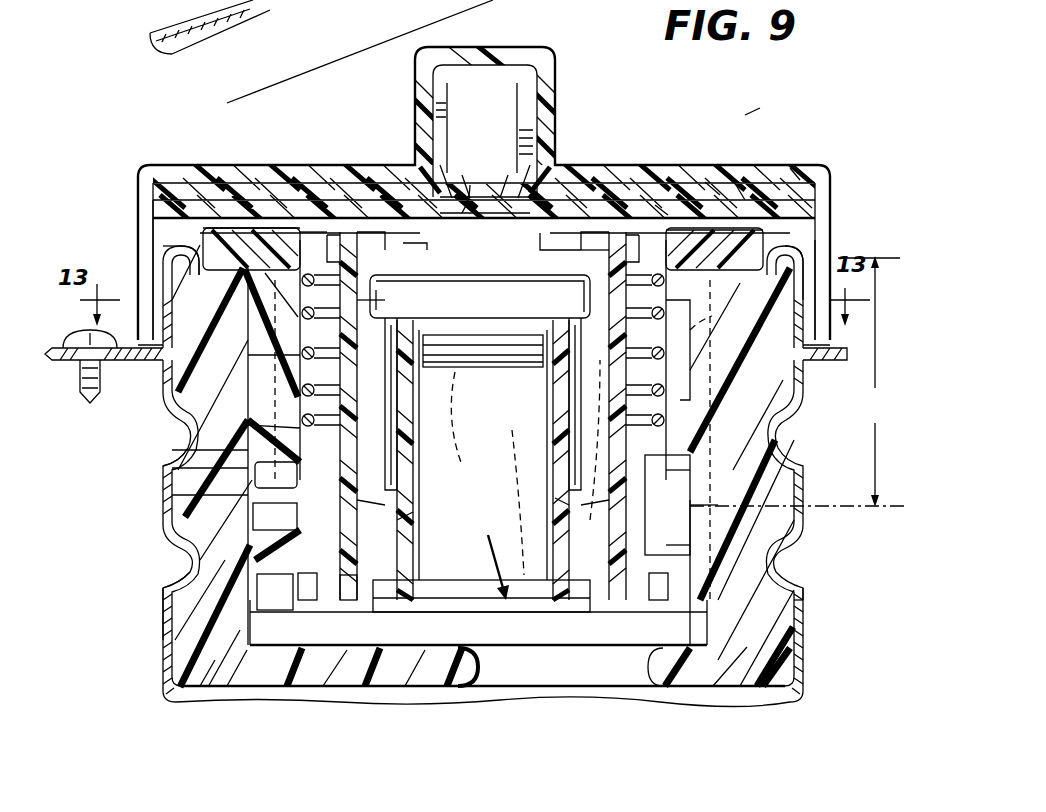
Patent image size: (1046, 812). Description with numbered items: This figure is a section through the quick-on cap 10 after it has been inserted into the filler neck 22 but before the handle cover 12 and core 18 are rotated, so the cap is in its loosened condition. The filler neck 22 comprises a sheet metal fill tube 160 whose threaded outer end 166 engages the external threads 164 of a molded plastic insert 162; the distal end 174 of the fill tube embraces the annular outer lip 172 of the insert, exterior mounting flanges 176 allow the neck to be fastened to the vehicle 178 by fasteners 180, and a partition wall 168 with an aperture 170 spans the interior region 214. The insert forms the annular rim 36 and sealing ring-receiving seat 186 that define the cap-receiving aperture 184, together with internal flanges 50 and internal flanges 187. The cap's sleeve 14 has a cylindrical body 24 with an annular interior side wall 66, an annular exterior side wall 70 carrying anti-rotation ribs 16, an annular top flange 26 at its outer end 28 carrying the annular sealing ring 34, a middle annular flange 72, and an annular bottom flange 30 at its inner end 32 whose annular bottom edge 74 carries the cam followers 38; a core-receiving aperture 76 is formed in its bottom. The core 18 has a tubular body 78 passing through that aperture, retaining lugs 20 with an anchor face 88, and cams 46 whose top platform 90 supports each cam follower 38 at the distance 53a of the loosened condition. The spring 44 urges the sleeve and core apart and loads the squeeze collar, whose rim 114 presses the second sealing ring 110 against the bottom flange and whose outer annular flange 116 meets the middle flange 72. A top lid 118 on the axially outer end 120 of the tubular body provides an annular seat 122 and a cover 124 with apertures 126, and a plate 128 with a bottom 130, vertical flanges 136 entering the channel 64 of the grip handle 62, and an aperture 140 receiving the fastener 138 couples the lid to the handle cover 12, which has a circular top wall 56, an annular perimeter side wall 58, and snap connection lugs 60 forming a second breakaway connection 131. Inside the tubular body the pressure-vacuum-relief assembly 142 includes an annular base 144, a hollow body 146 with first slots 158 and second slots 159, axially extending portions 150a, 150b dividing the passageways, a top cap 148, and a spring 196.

The quick-on cap 10 is at (750, 110).
The handle cover 12 is at (786, 165).
The sleeve 14 is at (690, 233).
The anti-rotation ribs 16 is at (260, 340).
The core 18 is at (637, 265).
The retaining lugs 20 is at (265, 600).
The filler neck 22 is at (804, 686).
The cylindrical body 24 is at (688, 300).
The annular top flange 26 is at (712, 182).
The outer end 28 is at (345, 232).
The annular bottom flange 30 is at (677, 487).
The inner end 32 is at (712, 478).
The annular sealing ring 34 is at (236, 250).
The annular rim 36 is at (210, 275).
The cam follower 38 is at (626, 542).
The spring 44 is at (318, 430).
The cam 46 is at (670, 547).
The internal flanges 50 is at (697, 506).
The distance 53a is at (869, 381).
The circular top wall 56 is at (192, 183).
The annular perimeter side wall 58 is at (138, 192).
The snap connection lugs 60 is at (208, 195).
The grip handle 62 is at (568, 88).
The channel 64 is at (553, 66).
The annular interior side wall 66 is at (255, 358).
The annular exterior side wall 70 is at (703, 345).
The middle annular flange 72 is at (348, 447).
The annular bottom edge 74 is at (340, 540).
The core-receiving aperture 76 is at (617, 505).
The tubular body 78 is at (355, 300).
The anchor face 88 is at (258, 535).
The top platform 90 is at (700, 628).
The second sealing ring 110 is at (247, 495).
The rim 114 is at (190, 452).
The outer annular flange 116 is at (275, 425).
The top lid 118 is at (390, 218).
The axially outer end 120 is at (612, 238).
The annular seat 122 is at (660, 205).
The cover 124 is at (590, 232).
The apertures 126 is at (542, 232).
The plate 128 is at (812, 185).
The bottom 130 is at (303, 229).
The second breakaway connection 131 is at (152, 226).
The vertical flanges 136 is at (438, 100).
The fastener 138 is at (462, 190).
The aperture 140 is at (474, 192).
The pressure-vacuum-relief assembly 142 is at (386, 618).
The annular base 144 is at (390, 605).
The hollow body 146 is at (408, 457).
The top cap 148 is at (482, 308).
The axially extending portion 150a is at (404, 550).
The axially extending portion 150b is at (560, 430).
The first pair of slots 158 is at (442, 360).
The second pair of slots 159 is at (565, 500).
The fill tube 160 is at (202, 33).
The insert 162 is at (180, 648).
The external threads 164 is at (263, 0).
The threaded outer end 166 is at (262, 0).
The partition wall 168 is at (443, 625).
The aperture 170 is at (478, 664).
The annular outer lip 172 is at (180, 268).
The distal end 174 is at (163, 247).
The exterior mounting flanges 176 is at (147, 362).
The vehicle 178 is at (72, 365).
The fasteners 180 is at (366, 2).
The cap-receiving aperture 184 is at (740, 172).
The sealing ring-receiving seat 186 is at (797, 162).
The internal flanges 187 is at (247, 468).
The spring 196 is at (517, 300).
The interior region 214 is at (700, 628).